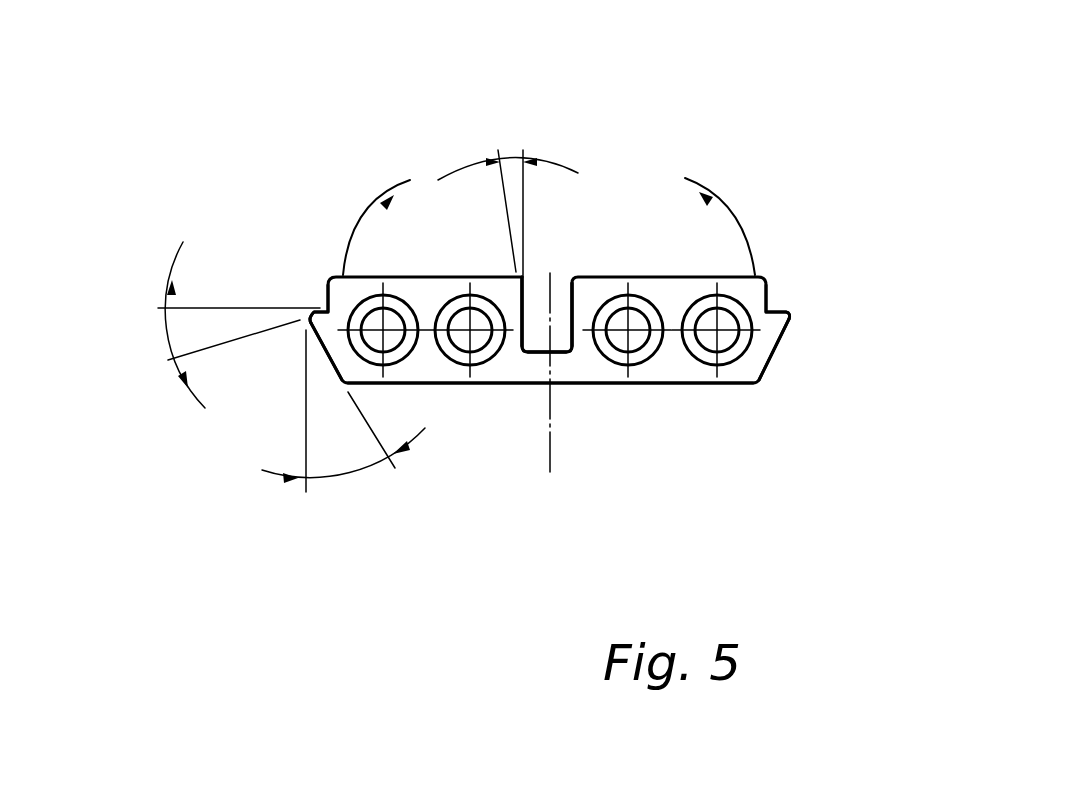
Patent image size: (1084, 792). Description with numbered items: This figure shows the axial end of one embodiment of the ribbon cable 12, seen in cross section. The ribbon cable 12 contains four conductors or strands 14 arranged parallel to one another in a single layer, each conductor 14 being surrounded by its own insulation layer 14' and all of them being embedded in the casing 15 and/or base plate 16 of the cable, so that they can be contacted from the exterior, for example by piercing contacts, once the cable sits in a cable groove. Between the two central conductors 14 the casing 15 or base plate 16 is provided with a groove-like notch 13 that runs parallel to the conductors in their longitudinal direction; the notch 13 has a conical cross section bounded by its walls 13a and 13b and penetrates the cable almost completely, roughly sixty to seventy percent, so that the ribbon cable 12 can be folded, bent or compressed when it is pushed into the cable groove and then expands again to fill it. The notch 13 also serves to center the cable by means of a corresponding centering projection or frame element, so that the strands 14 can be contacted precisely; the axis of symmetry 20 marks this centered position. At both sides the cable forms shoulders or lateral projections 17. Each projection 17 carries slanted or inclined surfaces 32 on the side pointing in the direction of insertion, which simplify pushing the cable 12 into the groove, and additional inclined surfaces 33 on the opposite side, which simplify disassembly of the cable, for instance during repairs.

The ribbon cable 12 is at (757, 360).
The groove-like notch 13 is at (548, 277).
The first slot wall 13a is at (511, 160).
The second slot wall 13b is at (574, 280).
The conductors 14 is at (549, 390).
The insulation layer 14' is at (550, 418).
The casing 15 is at (568, 362).
The base plate 16 is at (490, 384).
The lateral projections 17 is at (313, 327).
The axis of symmetry 20 is at (563, 280).
The inclined surfaces 32 is at (355, 478).
The inclined surfaces 33 is at (172, 335).